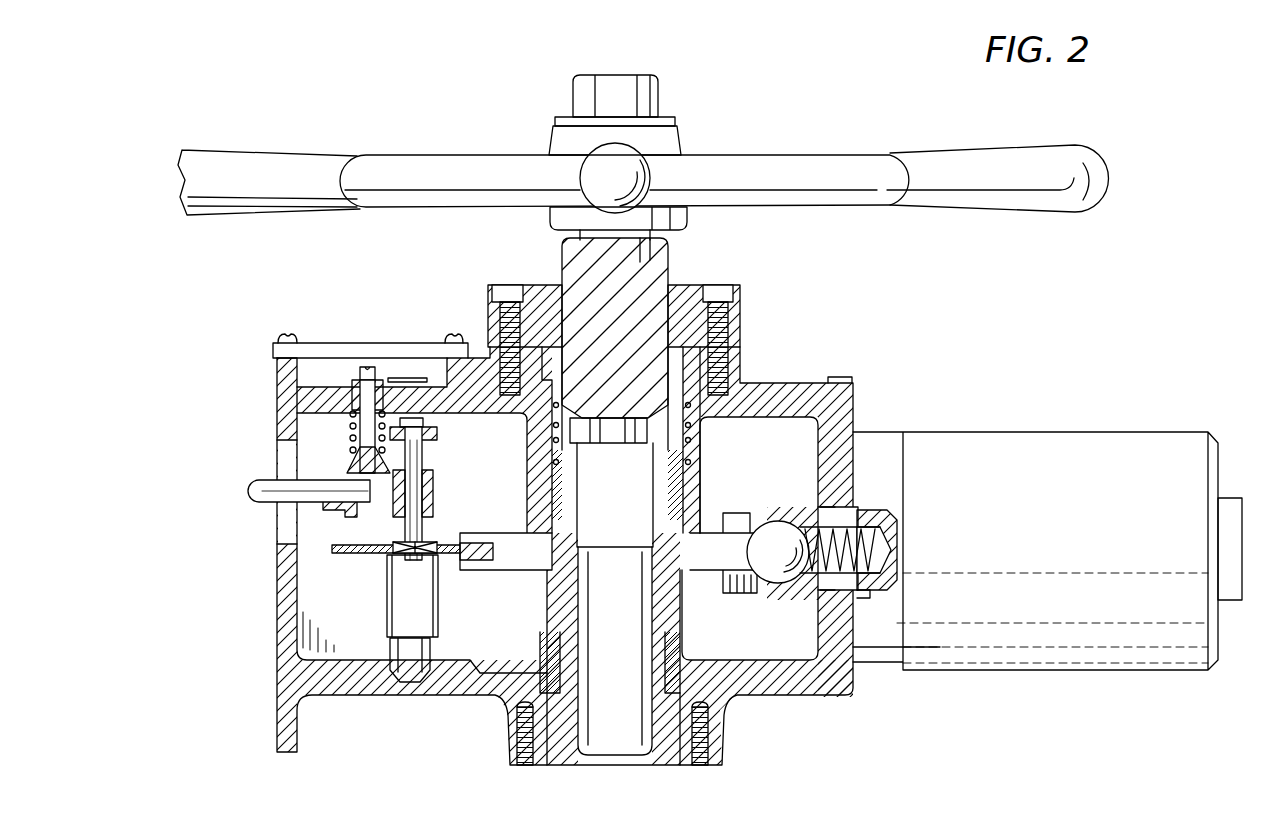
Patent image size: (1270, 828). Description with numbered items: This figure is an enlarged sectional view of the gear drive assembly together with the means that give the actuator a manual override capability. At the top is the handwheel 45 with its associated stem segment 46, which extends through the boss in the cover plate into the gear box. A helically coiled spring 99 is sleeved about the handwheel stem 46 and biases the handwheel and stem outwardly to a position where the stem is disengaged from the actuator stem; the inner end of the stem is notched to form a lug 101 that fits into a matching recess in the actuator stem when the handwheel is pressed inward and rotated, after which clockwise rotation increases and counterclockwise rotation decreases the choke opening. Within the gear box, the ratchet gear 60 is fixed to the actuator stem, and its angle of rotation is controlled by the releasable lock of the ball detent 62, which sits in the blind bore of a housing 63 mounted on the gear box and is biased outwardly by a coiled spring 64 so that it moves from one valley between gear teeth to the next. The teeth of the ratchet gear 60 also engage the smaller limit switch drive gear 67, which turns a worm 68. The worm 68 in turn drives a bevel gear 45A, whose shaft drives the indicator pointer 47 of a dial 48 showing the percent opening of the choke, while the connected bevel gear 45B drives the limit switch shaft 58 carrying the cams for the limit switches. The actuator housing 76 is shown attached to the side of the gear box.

The handwheel 45 is at (850, 207).
The handwheel stem segment 46 is at (638, 287).
The indicator pointer 47 is at (407, 378).
The dial 48 is at (332, 383).
The bevel gear 45A is at (350, 470).
The bevel gear 45B is at (345, 518).
The shaft 58 is at (262, 477).
The ratchet gear 60 is at (510, 533).
The ball detent 62 is at (773, 545).
The housing 63 is at (880, 512).
The coiled spring 64 is at (868, 590).
The limit switch drive gear 67 is at (363, 553).
The worm 68 is at (433, 470).
The actuator 76 is at (1095, 432).
The helically coiled spring 99 is at (688, 412).
The lug 101 is at (615, 443).